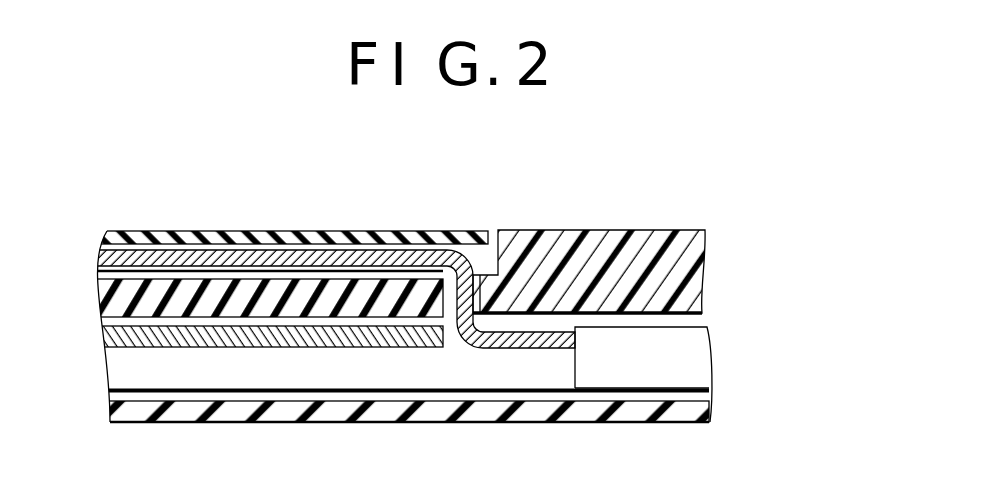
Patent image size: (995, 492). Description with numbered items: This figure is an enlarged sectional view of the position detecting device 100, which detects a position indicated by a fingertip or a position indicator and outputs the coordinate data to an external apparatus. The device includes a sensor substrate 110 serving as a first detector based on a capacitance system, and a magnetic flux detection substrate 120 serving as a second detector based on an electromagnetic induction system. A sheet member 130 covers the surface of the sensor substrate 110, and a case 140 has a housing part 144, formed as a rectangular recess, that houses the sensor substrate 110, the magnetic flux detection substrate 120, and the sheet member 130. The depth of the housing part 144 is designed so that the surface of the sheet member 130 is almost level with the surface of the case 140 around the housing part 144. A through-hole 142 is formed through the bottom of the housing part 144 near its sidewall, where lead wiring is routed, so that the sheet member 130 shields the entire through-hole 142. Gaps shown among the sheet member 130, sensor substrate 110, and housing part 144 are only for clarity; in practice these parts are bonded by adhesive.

The position detecting device 100 is at (650, 198).
The sensor substrate 110 is at (210, 260).
The magnetic flux detection substrate 120 is at (340, 333).
The sheet member 130 is at (323, 237).
The case 140 is at (573, 238).
The through-hole 142 is at (475, 276).
The housing part 144 is at (152, 277).